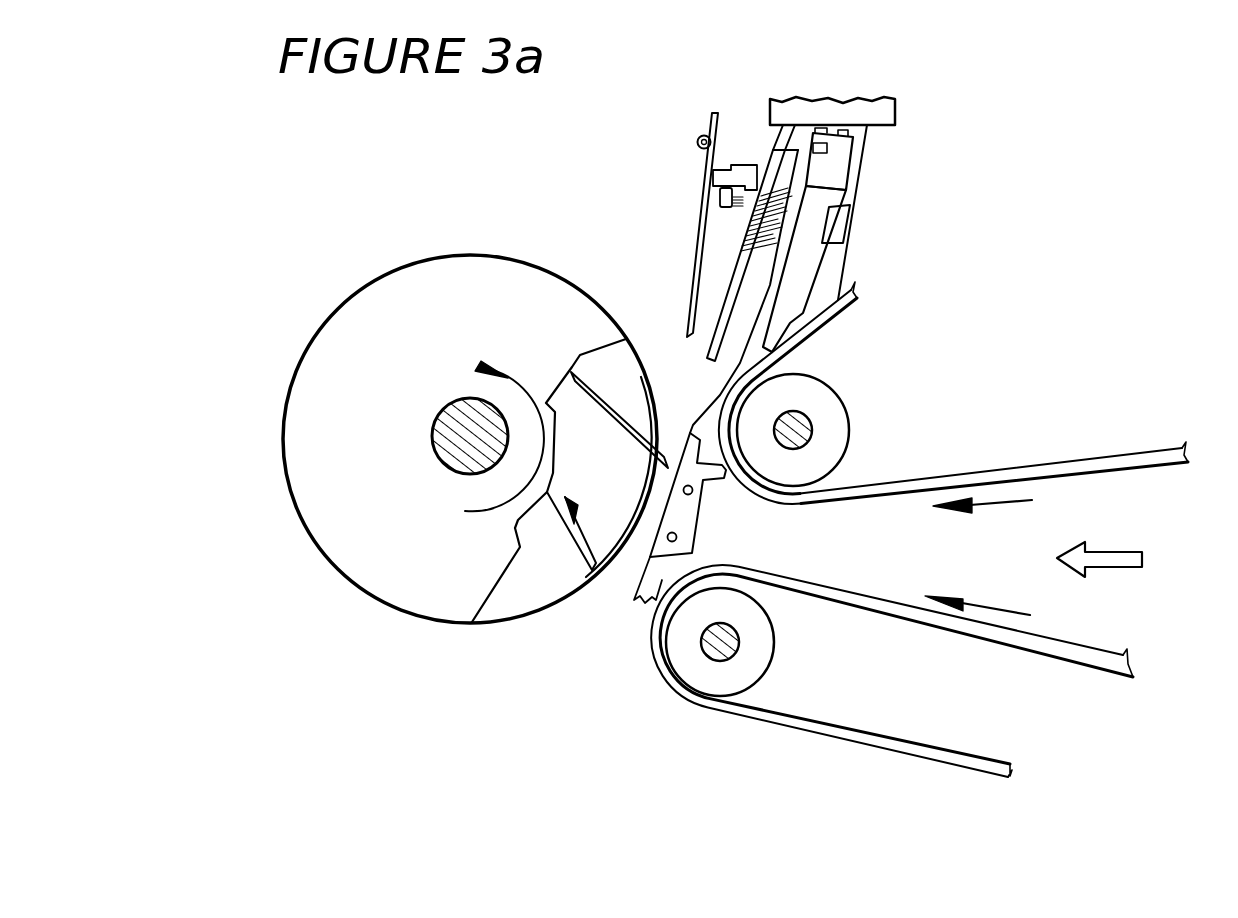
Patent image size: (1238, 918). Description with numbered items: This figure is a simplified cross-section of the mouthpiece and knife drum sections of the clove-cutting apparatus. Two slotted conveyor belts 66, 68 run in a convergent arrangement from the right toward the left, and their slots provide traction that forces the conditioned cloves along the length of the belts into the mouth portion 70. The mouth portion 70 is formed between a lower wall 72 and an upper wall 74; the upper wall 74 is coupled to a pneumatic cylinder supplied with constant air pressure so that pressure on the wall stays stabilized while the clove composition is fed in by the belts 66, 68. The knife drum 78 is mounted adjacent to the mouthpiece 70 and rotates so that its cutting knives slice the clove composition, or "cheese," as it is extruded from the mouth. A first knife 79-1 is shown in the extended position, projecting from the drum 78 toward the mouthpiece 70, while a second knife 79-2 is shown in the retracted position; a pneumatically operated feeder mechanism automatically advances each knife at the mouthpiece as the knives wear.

The knife drum 78 is at (317, 491).
The first knife 79-1 is at (657, 383).
The second knife 79-2 is at (585, 533).
The upper wall 74 is at (753, 302).
The mouth portion 70 is at (740, 530).
The slotted conveyor band 68 is at (1090, 467).
The slotted conveyor band 66 is at (1057, 643).
The lower wall 72 is at (630, 592).